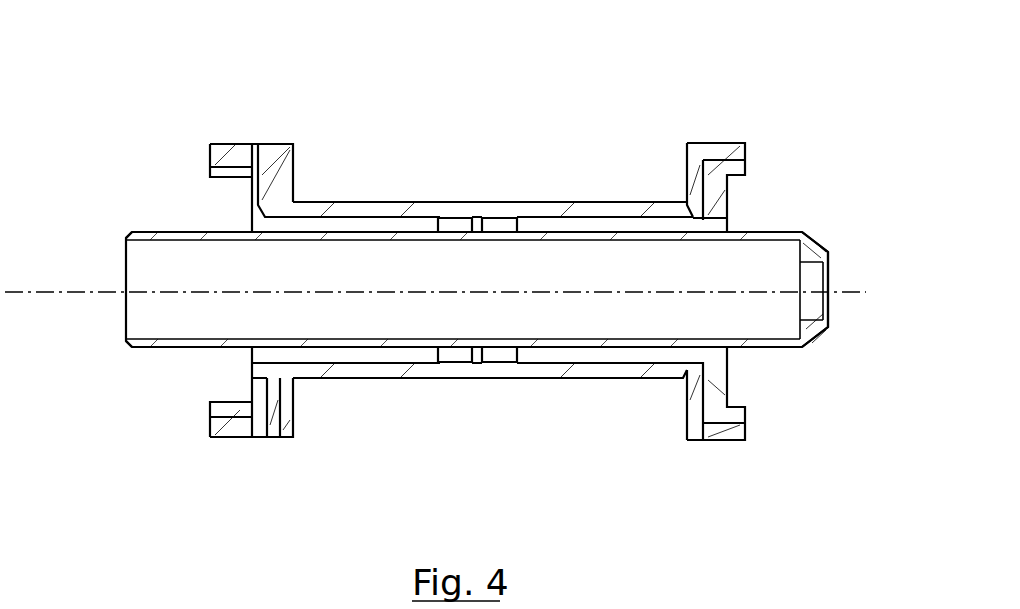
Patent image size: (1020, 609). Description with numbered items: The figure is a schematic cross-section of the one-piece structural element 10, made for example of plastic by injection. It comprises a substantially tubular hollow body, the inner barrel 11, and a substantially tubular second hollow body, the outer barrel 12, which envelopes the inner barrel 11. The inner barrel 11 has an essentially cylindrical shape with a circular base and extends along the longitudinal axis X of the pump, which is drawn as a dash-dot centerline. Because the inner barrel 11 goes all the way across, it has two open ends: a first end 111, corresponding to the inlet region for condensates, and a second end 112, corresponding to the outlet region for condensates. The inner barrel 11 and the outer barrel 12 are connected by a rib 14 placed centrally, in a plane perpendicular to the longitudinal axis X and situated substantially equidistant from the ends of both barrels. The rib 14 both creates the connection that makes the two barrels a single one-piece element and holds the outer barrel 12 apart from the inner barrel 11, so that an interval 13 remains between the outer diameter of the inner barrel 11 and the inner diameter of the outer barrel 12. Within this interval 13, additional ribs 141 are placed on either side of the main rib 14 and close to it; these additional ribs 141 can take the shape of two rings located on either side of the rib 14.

The structural element 10 is at (476, 288).
The inner barrel 11 is at (168, 346).
The first end 111 is at (803, 316).
The second end 112 is at (126, 292).
The outer barrel 12 is at (263, 398).
The interval 13 is at (573, 358).
The rib 14 is at (478, 219).
The additional ribs 141 is at (455, 226).
The longitudinal axis X is at (450, 293).